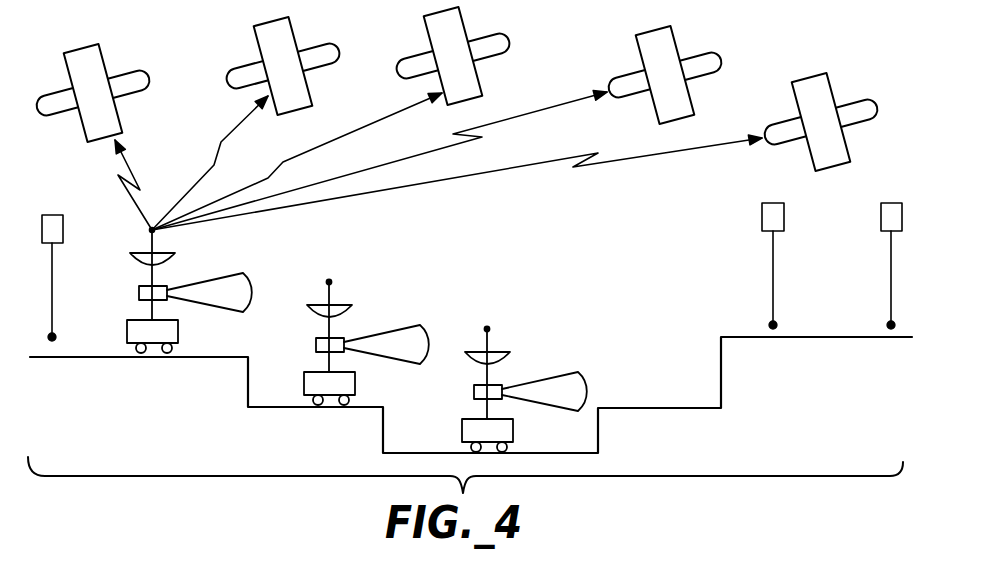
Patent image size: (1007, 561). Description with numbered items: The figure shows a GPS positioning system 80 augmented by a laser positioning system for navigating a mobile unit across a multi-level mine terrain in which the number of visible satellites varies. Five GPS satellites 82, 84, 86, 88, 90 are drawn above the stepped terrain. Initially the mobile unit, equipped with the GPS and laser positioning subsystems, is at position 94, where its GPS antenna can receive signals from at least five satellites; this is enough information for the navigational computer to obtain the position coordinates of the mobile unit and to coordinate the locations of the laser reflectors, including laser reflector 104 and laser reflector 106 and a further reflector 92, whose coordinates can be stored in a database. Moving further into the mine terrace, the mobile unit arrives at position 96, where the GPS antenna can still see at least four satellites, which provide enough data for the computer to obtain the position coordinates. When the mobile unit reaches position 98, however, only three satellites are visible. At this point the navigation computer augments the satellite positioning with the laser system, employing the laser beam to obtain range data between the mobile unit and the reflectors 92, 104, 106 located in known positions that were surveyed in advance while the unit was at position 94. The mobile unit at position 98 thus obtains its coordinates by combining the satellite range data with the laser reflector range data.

The satellite communication system 80 is at (190, 420).
The satellite 82 is at (104, 62).
The satellite 84 is at (294, 35).
The satellite 86 is at (464, 27).
The satellite 88 is at (675, 42).
The satellite 90 is at (832, 88).
The fixed remote unit 92 is at (54, 305).
The position 94 is at (180, 327).
The position 96 is at (358, 378).
The position 98 is at (514, 423).
The laser reflector 104 is at (772, 288).
The laser reflector 106 is at (890, 288).